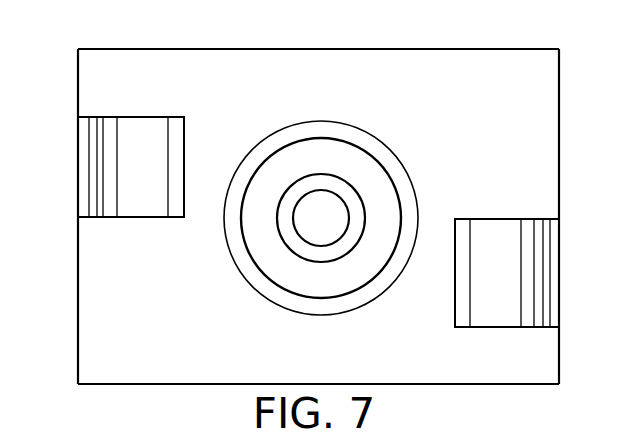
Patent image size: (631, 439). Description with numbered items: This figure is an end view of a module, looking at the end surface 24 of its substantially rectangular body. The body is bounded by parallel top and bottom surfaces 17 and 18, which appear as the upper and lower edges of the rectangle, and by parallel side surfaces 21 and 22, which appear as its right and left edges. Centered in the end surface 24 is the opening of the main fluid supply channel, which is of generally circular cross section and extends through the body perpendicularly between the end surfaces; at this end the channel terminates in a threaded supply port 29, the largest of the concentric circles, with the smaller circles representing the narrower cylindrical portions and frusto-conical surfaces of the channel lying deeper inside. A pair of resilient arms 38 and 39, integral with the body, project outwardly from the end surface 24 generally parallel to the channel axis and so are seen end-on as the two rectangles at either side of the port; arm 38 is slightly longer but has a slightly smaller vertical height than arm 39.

The top surface 17 is at (262, 49).
The bottom surface 18 is at (135, 385).
The side surface 21 is at (559, 167).
The side surface 22 is at (78, 329).
The end surface 24 is at (309, 215).
The threaded supply port 29 is at (263, 271).
The resilient arm 38 is at (128, 168).
The resilient arm 39 is at (517, 287).